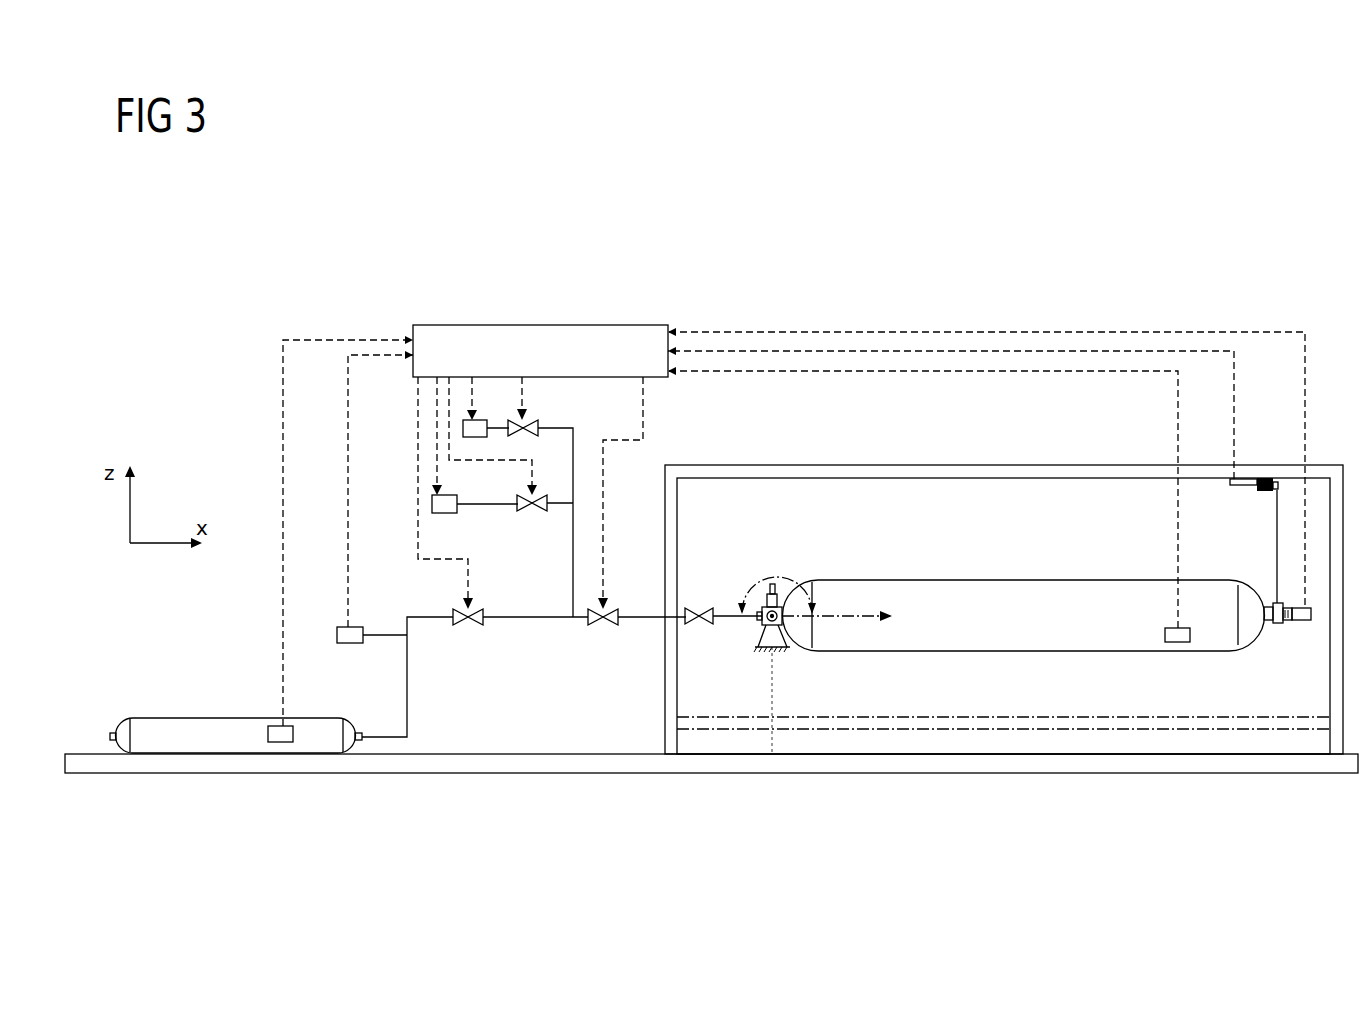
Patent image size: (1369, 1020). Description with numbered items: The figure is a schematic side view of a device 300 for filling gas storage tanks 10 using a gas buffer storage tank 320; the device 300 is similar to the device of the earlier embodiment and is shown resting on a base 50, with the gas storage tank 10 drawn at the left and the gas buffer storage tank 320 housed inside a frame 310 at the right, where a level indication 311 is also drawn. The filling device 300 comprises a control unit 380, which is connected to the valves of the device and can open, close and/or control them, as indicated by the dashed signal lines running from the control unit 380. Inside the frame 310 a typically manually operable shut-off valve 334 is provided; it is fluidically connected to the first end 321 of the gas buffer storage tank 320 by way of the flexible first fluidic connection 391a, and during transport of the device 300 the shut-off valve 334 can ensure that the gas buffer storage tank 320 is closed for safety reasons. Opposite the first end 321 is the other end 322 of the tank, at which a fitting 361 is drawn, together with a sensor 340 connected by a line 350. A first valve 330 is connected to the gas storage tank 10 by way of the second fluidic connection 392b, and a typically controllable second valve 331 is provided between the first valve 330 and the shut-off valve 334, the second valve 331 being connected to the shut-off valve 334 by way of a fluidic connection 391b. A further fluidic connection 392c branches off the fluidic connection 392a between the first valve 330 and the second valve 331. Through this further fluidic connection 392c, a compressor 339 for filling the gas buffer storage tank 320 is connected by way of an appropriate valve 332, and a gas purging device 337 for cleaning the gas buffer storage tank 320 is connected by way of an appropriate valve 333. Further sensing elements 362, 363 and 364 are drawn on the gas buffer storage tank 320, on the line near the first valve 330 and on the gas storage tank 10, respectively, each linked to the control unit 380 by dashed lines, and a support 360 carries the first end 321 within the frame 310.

The gas storage tank 10 is at (220, 740).
The base plate 50 is at (72, 755).
The device for filling gas storage tanks 300 is at (766, 248).
The frame 310 is at (843, 468).
The liquid bath 311 is at (927, 726).
The gas buffer storage tank 320 is at (965, 600).
The first end 321 is at (766, 566).
The tank end 322 is at (1264, 655).
The first valve 330 is at (470, 630).
The second valve 331 is at (606, 630).
The valve 332 is at (536, 515).
The valve 333 is at (540, 428).
The shut-off valve 334 is at (706, 608).
The gas purging device 337 is at (478, 432).
The compressor 339 is at (443, 508).
The sensor 340 is at (1258, 502).
The line 350 is at (1275, 560).
The support 360 is at (752, 652).
The fitting 361 is at (1300, 627).
The sensor 362 is at (1165, 632).
The sensor 363 is at (360, 633).
The sensor 364 is at (288, 733).
The control unit 380 is at (559, 363).
The flexible first fluidic connection 391a is at (740, 626).
The fluidic connection 391b is at (628, 612).
The fluidic connection 392a is at (552, 620).
The second fluidic connection 392b is at (407, 718).
The further fluidic connection 392c is at (572, 610).